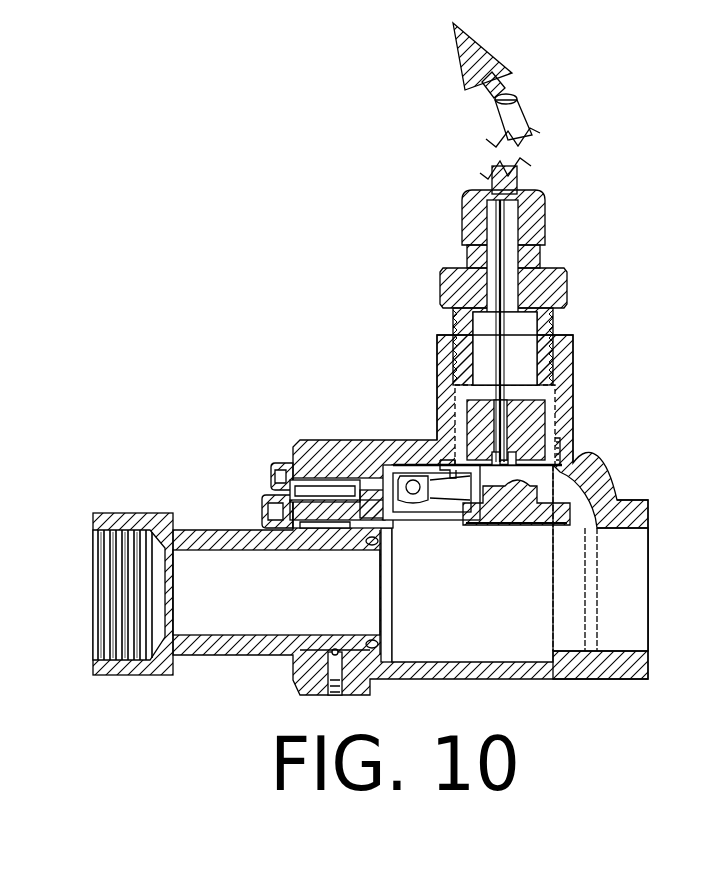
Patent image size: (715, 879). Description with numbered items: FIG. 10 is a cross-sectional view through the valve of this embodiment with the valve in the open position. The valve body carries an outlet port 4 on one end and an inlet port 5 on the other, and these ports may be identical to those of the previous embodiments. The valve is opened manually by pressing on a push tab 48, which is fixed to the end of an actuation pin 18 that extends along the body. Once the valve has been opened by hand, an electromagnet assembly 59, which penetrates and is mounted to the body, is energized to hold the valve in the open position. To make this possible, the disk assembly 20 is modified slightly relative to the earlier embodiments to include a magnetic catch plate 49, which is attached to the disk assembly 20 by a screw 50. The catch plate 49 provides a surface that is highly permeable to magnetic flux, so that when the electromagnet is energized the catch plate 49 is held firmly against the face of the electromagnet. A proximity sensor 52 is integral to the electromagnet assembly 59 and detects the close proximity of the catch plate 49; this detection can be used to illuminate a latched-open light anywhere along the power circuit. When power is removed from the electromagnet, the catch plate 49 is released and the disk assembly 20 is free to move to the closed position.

The outlet port 4 is at (112, 604).
The inlet port 5 is at (636, 600).
The actuation pin 18 is at (326, 512).
The disk assembly 20 is at (508, 528).
The push tab 48 is at (283, 490).
The magnetic catch plate 49 is at (543, 470).
The screw 50 is at (478, 490).
The proximity sensor 52 is at (504, 412).
The electromagnet assembly 59 is at (418, 350).